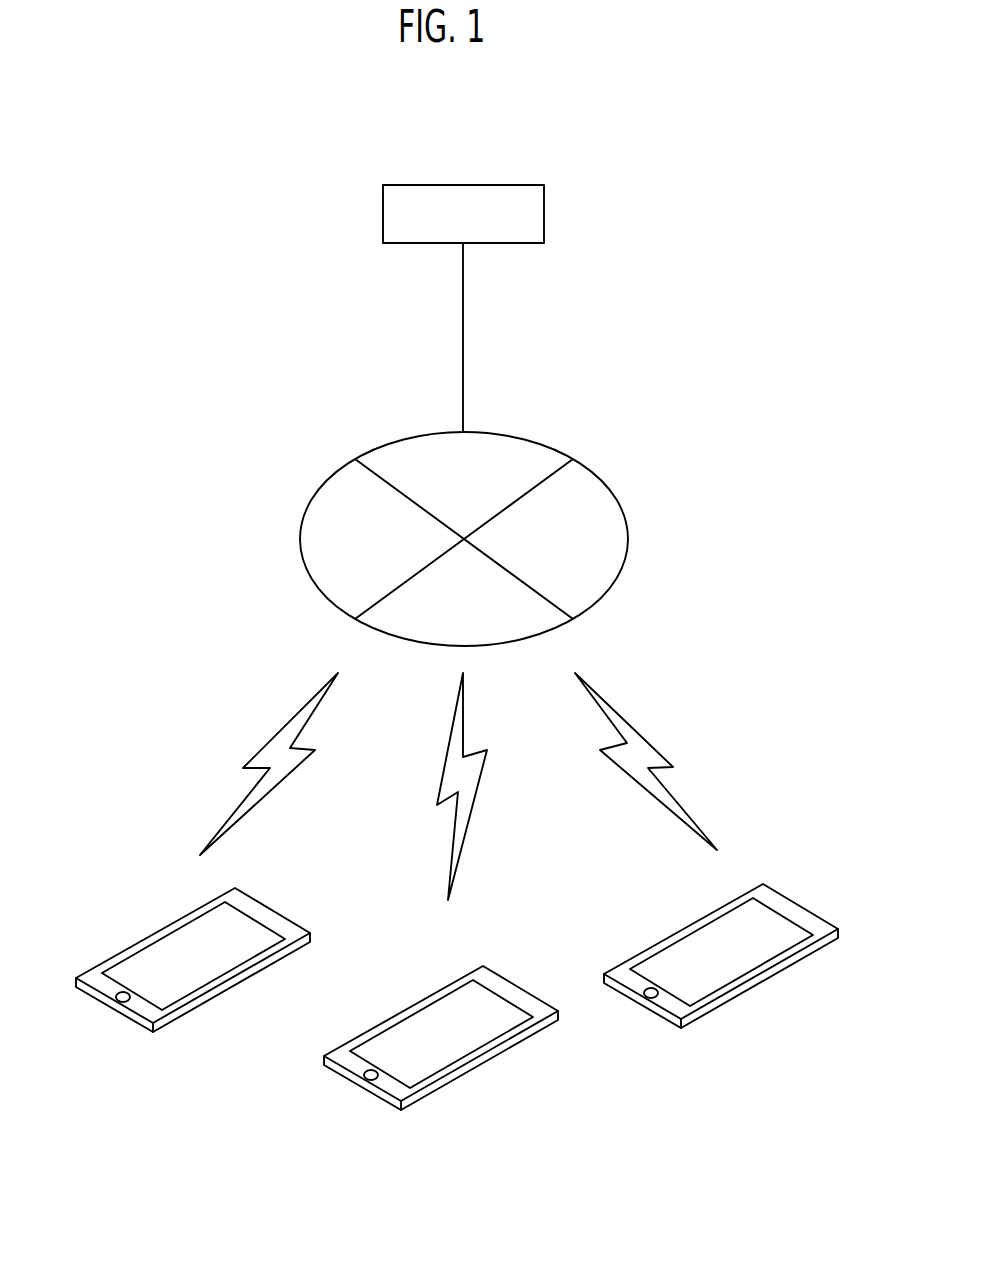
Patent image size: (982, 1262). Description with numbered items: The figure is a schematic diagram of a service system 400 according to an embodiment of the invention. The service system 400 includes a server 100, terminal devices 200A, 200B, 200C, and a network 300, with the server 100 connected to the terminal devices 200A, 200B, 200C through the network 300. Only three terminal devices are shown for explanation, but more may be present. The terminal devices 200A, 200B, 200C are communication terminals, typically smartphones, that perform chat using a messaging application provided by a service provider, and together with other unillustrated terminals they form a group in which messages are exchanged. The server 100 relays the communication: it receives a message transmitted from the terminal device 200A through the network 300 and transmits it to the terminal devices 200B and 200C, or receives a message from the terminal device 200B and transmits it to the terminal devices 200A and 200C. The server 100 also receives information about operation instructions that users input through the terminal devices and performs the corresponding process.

The server 100 is at (544, 213).
The terminal device 200A is at (290, 885).
The terminal device 200B is at (537, 962).
The terminal device 200C is at (818, 880).
The network 300 is at (530, 438).
The service system 400 is at (692, 155).